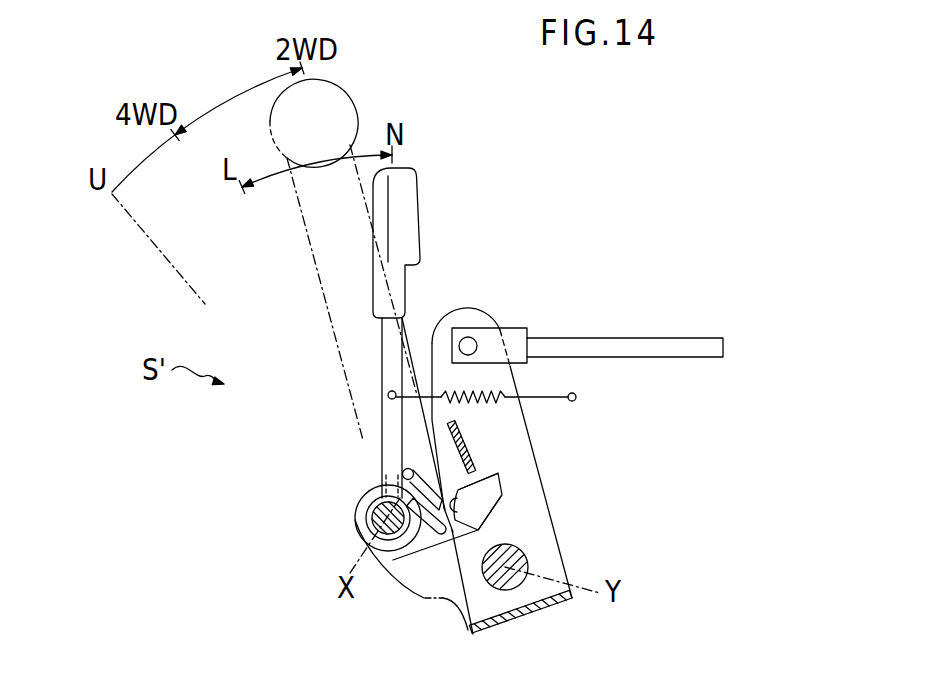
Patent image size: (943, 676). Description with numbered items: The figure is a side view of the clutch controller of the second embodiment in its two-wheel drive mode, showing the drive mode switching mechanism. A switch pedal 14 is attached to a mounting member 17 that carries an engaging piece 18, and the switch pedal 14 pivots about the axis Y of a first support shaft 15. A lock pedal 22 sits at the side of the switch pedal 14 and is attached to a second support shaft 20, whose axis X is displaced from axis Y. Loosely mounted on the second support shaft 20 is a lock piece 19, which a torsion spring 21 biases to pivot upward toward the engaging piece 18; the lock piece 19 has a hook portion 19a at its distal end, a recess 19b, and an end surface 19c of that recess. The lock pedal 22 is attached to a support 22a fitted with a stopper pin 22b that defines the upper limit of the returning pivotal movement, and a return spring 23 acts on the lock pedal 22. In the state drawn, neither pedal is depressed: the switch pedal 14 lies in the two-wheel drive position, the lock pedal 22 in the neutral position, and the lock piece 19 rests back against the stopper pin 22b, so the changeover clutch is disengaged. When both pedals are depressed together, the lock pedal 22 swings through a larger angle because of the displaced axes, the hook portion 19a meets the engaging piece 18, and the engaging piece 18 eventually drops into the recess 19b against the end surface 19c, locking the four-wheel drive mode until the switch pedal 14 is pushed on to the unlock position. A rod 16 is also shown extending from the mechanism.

The switch pedal 14 is at (345, 103).
The first support shaft 15 is at (518, 558).
The shift rod 16 is at (652, 338).
The mounting member 17 is at (478, 316).
The engaging piece 18 is at (470, 437).
The lock piece 19 is at (493, 488).
The hook portion 19a is at (493, 470).
The recess 19b is at (403, 471).
The end surface 19c is at (482, 520).
The second support shaft 20 is at (378, 514).
The torsion spring 21 is at (423, 537).
The lock pedal 22 is at (407, 215).
The support 22a is at (383, 356).
The stopper pin 22b is at (381, 473).
The return spring 23 is at (540, 395).